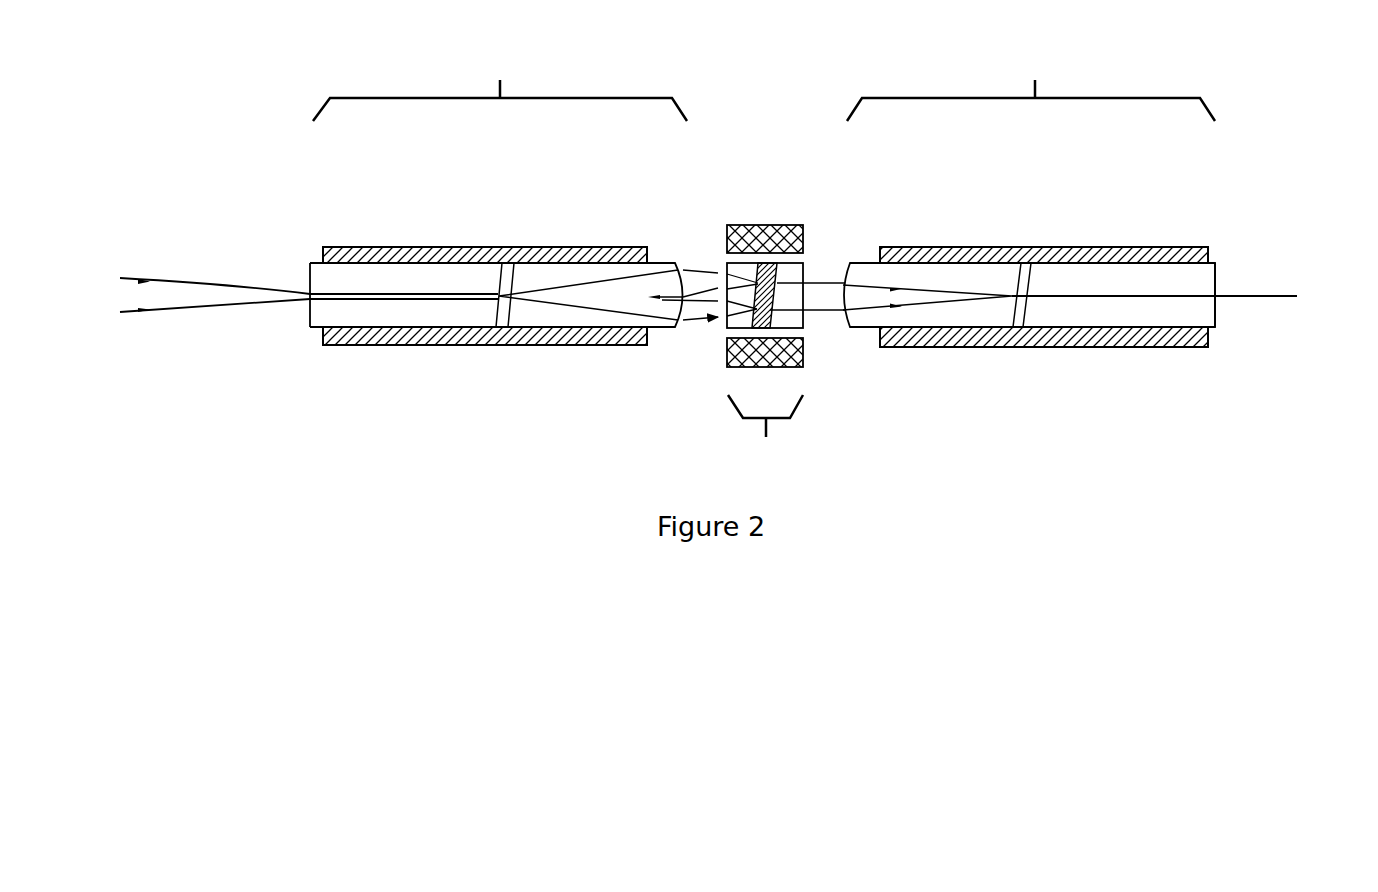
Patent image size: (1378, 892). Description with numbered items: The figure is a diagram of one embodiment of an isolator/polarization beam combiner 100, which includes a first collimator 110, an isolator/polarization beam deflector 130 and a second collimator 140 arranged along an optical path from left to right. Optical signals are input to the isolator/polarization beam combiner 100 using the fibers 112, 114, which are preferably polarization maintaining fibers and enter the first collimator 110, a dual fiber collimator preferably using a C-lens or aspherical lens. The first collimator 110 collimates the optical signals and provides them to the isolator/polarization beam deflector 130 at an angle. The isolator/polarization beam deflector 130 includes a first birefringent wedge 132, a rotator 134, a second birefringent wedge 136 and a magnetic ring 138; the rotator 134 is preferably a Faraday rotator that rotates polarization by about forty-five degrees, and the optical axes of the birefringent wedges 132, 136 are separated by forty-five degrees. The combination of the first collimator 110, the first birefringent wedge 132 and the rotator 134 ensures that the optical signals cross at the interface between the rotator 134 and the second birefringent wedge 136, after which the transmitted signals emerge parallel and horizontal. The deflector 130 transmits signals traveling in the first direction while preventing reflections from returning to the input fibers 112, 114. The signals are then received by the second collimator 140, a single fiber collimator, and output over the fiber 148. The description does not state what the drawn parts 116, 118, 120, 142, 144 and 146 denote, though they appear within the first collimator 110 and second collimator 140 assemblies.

The isolator/polarization beam combiner 100 is at (733, 29).
The first collimator 110 is at (500, 84).
The fiber 112 is at (202, 287).
The fiber 114 is at (183, 307).
The dual-fiber ferrule 116 is at (310, 325).
The first collimating lens 118 is at (678, 277).
The first sleeve 120 is at (571, 247).
The isolator/polarization beam deflector 130 is at (765, 431).
The first birefringent wedge 132 is at (727, 320).
The rotator 134 is at (773, 320).
The second birefringent wedge 136 is at (807, 275).
The magnetic ring 138 is at (787, 227).
The second collimator 140 is at (1031, 84).
The second collimating lens 142 is at (850, 330).
The second ferrule 144 is at (1217, 312).
The second sleeve 146 is at (1123, 247).
The fiber 148 is at (1268, 300).